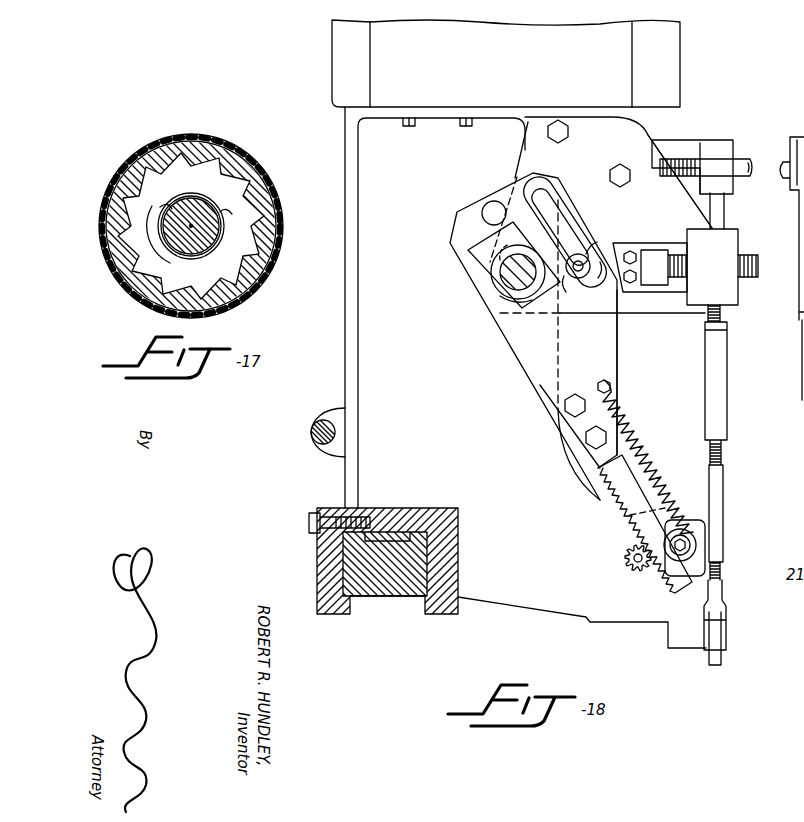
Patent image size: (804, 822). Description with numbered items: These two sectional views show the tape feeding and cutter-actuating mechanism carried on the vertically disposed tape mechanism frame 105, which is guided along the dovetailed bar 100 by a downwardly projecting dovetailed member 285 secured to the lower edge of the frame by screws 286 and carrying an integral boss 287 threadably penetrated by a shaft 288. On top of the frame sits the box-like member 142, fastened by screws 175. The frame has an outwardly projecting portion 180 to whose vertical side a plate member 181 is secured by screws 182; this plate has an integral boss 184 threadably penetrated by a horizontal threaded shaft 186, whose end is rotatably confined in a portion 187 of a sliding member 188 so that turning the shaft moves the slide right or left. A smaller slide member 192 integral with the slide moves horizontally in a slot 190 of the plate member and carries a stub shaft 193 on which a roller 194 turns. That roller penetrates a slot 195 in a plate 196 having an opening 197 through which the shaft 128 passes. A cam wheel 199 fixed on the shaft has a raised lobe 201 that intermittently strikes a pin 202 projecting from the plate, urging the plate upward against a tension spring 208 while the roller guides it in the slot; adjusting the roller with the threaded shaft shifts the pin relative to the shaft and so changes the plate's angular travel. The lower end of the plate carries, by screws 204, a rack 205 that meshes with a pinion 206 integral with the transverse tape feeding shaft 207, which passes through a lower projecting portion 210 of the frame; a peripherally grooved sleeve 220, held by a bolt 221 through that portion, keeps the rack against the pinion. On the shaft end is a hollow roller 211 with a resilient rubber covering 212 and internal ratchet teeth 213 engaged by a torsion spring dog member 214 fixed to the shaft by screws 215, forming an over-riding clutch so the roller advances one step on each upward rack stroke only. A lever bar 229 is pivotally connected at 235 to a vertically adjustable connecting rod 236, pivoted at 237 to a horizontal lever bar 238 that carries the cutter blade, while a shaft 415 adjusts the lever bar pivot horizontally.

In FIG. 18, the dovetailed bar 100 is at (398, 598).
In FIG. 18, the tape mechanism frame 105 is at (345, 305).
In FIG. 18, the shaft 128 is at (504, 290).
In FIG. 18, the box-like member 142 is at (333, 32).
In FIG. 18, the screws 175 is at (458, 140).
In FIG. 18, the outwardly projecting portion 180 is at (636, 118).
In FIG. 18, the plate member 181 is at (526, 165).
In FIG. 18, the screws 182 is at (620, 165).
In FIG. 18, the boss 184 is at (738, 240).
In FIG. 18, the threaded shaft 186 is at (757, 266).
In FIG. 18, the portion of sliding member 187 is at (652, 286).
In FIG. 18, the sliding member 188 is at (652, 250).
In FIG. 18, the slot 190 is at (565, 250).
In FIG. 18, the smaller slide member 192 is at (600, 262).
In FIG. 18, the stub shaft 193 is at (590, 250).
In FIG. 18, the roller 194 is at (568, 288).
In FIG. 18, the slot 195 is at (560, 196).
In FIG. 18, the plate 196 is at (622, 358).
In FIG. 18, the opening 197 is at (516, 304).
In FIG. 18, the cam wheel 199 is at (492, 277).
In FIG. 18, the raised lobe 201 is at (490, 230).
In FIG. 18, the pin 202 is at (484, 205).
In FIG. 18, the screws 204 is at (576, 412).
In FIG. 18, the rack 205 is at (630, 520).
In FIG. 18, the pinion 206 is at (628, 552).
In FIG. 17, the tape feeding shaft 207 is at (214, 244).
In FIG. 18, the tape feeding shaft 207 is at (634, 570).
In FIG. 18, the tension spring 208 is at (650, 460).
In FIG. 18, the lower projecting portion 210 is at (688, 520).
In FIG. 17, the roller 211 is at (212, 140).
In FIG. 17, the resilient rubber covering 212 is at (262, 172).
In FIG. 17, the internal ratchet teeth 213 is at (222, 170).
In FIG. 17, the torsion spring dog member 214 is at (145, 226).
In FIG. 17, the screws 215 is at (162, 206).
In FIG. 18, the peripherally grooved sleeve 220 is at (697, 542).
In FIG. 18, the bolt 221 is at (690, 552).
In FIG. 18, the lever bar 229 is at (686, 146).
In FIG. 18, the pivot 235 is at (733, 160).
In FIG. 18, the connecting rod 236 is at (727, 480).
In FIG. 18, the pivotal connection 237 is at (727, 628).
In FIG. 18, the lever bar 238 is at (723, 656).
In FIG. 18, the dovetailed member 285 is at (317, 580).
In FIG. 18, the screws 286 is at (309, 524).
In FIG. 18, the boss 287 is at (322, 452).
In FIG. 18, the shaft 288 is at (323, 420).
In FIG. 18, the shaft 415 is at (786, 178).